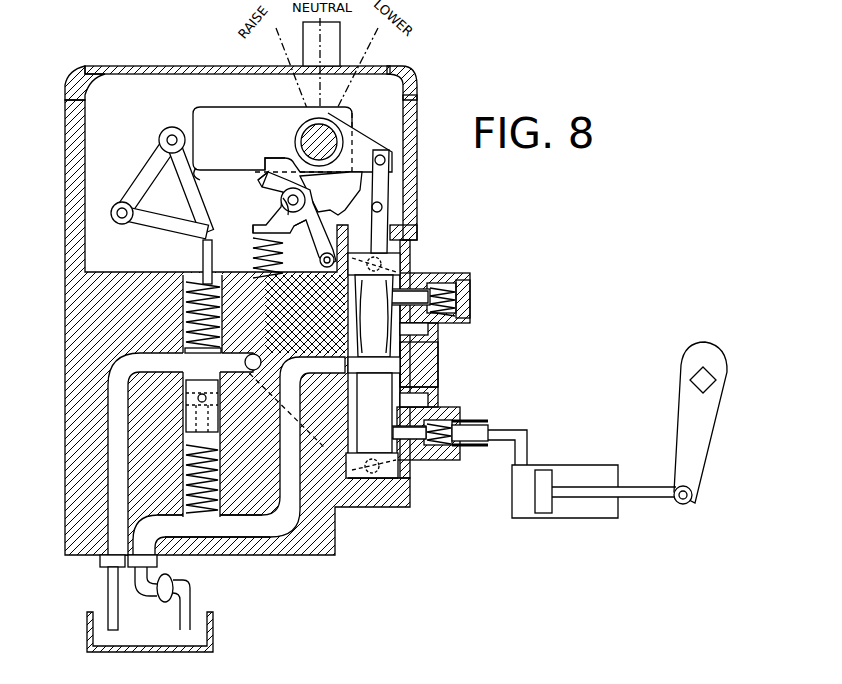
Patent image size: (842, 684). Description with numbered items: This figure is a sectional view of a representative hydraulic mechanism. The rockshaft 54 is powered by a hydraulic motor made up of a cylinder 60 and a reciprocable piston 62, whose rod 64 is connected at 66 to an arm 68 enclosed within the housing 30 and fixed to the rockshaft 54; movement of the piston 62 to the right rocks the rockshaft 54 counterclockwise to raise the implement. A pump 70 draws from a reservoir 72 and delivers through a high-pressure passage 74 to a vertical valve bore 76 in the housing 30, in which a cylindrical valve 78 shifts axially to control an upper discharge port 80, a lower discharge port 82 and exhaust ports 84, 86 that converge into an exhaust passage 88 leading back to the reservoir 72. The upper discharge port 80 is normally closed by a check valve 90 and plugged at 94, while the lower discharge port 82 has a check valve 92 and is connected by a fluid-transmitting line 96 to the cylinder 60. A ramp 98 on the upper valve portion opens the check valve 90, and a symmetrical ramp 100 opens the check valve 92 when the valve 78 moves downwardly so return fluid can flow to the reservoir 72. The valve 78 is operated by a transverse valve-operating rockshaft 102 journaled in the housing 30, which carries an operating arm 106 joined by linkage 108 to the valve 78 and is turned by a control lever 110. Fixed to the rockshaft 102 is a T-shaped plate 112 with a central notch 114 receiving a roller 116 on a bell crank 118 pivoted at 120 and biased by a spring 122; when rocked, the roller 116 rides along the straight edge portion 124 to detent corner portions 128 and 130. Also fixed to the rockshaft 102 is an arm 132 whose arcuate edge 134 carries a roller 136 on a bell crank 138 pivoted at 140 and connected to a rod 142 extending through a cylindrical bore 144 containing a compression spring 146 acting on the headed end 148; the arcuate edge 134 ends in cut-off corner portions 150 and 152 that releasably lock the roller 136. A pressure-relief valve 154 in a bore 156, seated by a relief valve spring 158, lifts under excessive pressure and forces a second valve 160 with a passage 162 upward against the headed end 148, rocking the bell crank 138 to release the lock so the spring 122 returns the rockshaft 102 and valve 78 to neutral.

The housing 30 is at (75, 253).
The rockshaft 54 is at (713, 372).
The cylinder 60 is at (590, 522).
The piston 62 is at (545, 478).
The rod 64 is at (652, 498).
The connection 66 is at (692, 500).
The arm 68 is at (686, 394).
The pump 70 is at (175, 576).
The reservoir 72 is at (213, 645).
The high-pressure passage 74 is at (240, 540).
The valve bore 76 is at (378, 495).
The valve 78 is at (395, 265).
The upper discharge port 80 is at (420, 280).
The lower discharge port 82 is at (445, 458).
The exhaust port 84 is at (300, 305).
The exhaust port 86 is at (322, 432).
The exhaust passage 88 is at (108, 433).
The check valve 90 is at (440, 325).
The check valve 92 is at (440, 416).
The plug 94 is at (462, 290).
The fluid-transmitting line 96 is at (515, 432).
The ramp 98 is at (438, 345).
The ramp 100 is at (395, 410).
The valve-operating rockshaft 102 is at (302, 120).
The operating arm 106 is at (365, 142).
The linkage 108 is at (388, 185).
The control lever 110 is at (322, 33).
The T-shaped plate 112 is at (288, 158).
The notch 114 is at (278, 204).
The roller 116 is at (290, 228).
The bell crank 118 is at (256, 230).
The pivot 120 is at (320, 260).
The spring 122 is at (255, 258).
The straight edge portion 124 is at (282, 200).
The corner portion 128 is at (258, 182).
The corner portion 130 is at (350, 205).
The arm 132 is at (232, 107).
The arcuate edge 134 is at (168, 126).
The roller 136 is at (158, 133).
The bell crank 138 is at (140, 158).
The pivot 140 is at (118, 224).
The rod 142 is at (200, 240).
The cylindrical bore 144 is at (178, 278).
The compression spring 146 is at (188, 328).
The headed end 148 is at (185, 362).
The cut-off corner portion 150 is at (192, 110).
The cut-off corner portion 152 is at (200, 176).
The pressure-relief valve 154 is at (190, 512).
The bore 156 is at (188, 468).
The relief valve spring 158 is at (215, 467).
The second valve 160 is at (218, 380).
The passage 162 is at (197, 398).